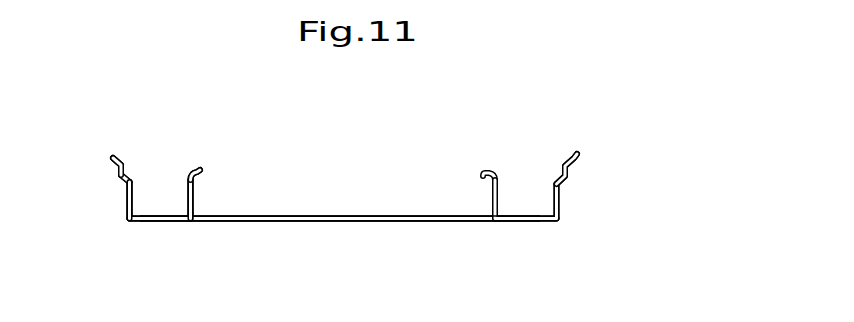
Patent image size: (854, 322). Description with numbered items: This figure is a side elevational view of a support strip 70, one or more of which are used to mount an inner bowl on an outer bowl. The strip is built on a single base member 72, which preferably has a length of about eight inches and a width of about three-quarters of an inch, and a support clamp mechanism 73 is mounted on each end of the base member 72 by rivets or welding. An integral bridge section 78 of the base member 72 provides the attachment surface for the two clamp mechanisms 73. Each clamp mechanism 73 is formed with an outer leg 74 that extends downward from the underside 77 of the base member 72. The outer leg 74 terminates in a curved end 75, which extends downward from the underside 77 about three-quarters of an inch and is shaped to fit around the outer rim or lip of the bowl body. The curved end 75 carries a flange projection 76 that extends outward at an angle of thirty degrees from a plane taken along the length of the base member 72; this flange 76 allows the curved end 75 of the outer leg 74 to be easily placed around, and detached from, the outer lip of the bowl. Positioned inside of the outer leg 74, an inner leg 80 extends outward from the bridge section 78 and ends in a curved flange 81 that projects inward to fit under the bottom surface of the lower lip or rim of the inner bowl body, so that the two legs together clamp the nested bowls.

The support strip 70 is at (576, 194).
The base member 72 is at (380, 225).
The support clamp mechanism 73 is at (166, 148).
The outer leg 74 is at (117, 173).
The curved end 75 is at (123, 183).
The flange projection 76 is at (111, 156).
The underside 77 is at (303, 216).
The bridge section 78 is at (233, 224).
The inner leg 80 is at (194, 198).
The curved flange 81 is at (202, 172).